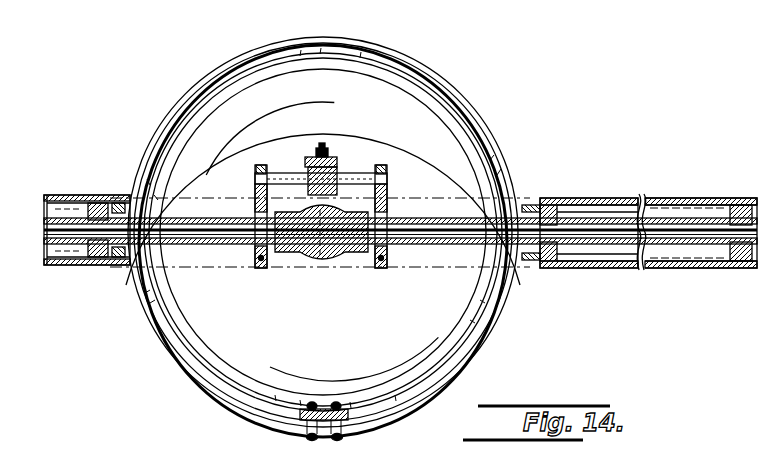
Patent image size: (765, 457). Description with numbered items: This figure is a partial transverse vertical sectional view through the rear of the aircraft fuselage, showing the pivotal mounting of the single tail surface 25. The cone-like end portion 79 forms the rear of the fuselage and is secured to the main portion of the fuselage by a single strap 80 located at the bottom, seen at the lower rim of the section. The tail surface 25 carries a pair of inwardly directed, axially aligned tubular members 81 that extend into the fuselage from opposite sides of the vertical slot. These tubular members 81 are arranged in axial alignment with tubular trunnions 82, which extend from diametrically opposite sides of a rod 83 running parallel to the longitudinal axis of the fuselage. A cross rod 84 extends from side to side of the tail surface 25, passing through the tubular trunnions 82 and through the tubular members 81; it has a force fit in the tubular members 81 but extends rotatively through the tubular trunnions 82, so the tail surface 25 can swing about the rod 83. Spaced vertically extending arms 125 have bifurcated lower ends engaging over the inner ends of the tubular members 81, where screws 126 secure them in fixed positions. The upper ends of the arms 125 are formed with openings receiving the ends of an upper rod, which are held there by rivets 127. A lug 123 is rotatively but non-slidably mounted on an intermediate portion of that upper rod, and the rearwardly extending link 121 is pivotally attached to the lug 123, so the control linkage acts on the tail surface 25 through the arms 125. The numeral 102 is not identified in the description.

The cone-like end portion 79 is at (458, 138).
The tubular members 81 is at (186, 218).
The rod 84 is at (591, 238).
The tail surface 25 is at (683, 200).
The arms 125 is at (257, 196).
The rivets 127 is at (261, 165).
The lug 123 is at (337, 163).
The rearwardly extending link 121 is at (316, 152).
The tubular trunnions 82 is at (354, 254).
The screws 126 is at (259, 268).
The rod 83 is at (320, 258).
The strap 80 is at (346, 410).
The member 102 is at (125, 454).